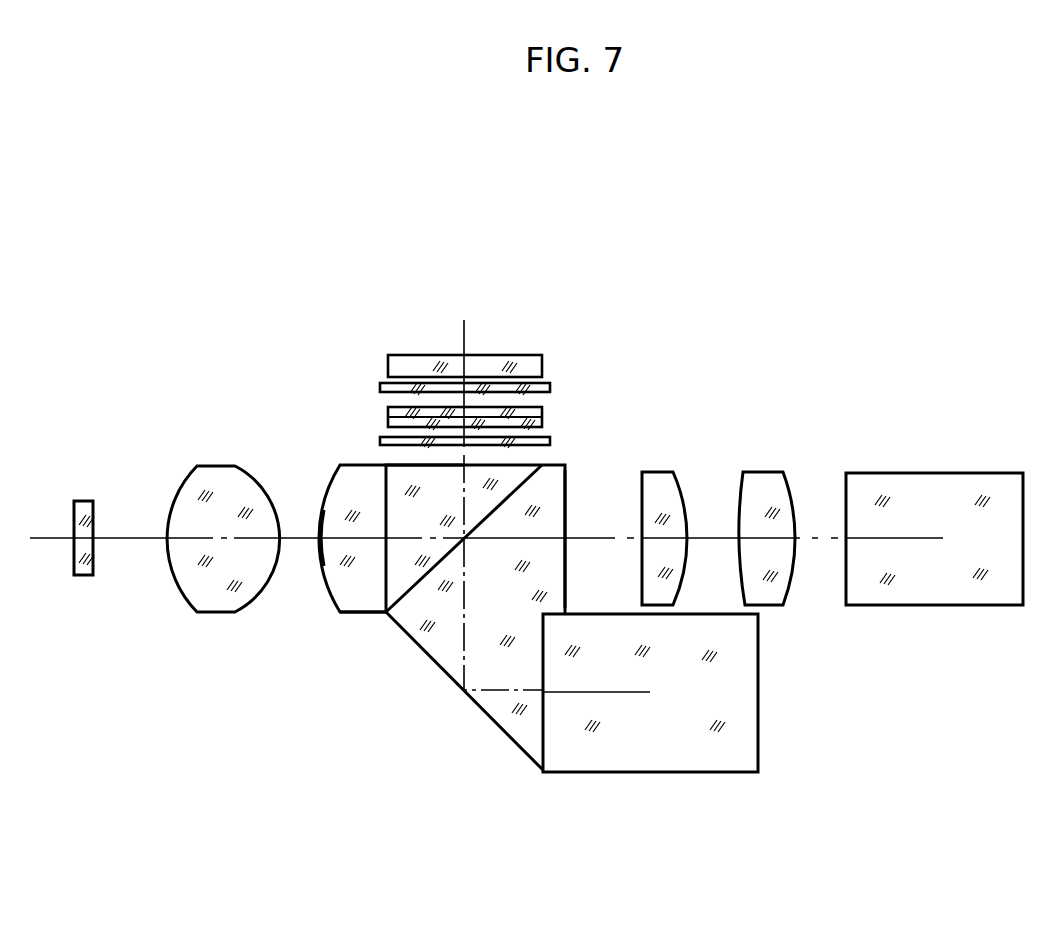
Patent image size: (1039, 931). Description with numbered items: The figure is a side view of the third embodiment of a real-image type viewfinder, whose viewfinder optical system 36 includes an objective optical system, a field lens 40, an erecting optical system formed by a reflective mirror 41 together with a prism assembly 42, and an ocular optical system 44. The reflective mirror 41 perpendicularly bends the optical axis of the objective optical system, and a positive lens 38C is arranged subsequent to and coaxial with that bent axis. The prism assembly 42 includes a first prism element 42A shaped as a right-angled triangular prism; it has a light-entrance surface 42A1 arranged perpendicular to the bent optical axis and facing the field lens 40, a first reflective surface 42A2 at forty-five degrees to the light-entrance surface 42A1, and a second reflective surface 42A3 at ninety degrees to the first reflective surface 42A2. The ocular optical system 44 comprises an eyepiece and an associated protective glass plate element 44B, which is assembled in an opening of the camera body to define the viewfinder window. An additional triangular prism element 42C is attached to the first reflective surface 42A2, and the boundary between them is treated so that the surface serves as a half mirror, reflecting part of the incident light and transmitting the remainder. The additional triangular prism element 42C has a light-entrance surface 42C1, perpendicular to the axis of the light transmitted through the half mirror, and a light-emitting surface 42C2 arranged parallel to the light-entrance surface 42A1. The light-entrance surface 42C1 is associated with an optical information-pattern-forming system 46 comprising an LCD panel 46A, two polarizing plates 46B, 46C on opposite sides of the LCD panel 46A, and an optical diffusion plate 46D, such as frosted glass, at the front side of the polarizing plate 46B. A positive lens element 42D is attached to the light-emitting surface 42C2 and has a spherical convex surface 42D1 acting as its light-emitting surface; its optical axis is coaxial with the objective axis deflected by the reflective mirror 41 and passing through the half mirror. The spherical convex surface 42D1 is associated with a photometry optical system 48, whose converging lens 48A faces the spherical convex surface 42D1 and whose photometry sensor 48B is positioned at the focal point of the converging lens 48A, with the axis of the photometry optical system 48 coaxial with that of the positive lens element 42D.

The viewfinder optical system 36 is at (701, 351).
The positive lens 38C is at (770, 494).
The field lens 40 is at (658, 492).
The reflective mirror 41 is at (941, 582).
The prism assembly 42 is at (413, 682).
The first prism element 42A is at (440, 640).
The light-entrance surface 42A1 is at (567, 495).
The first reflective surface 42A2 is at (534, 483).
The second reflective surface 42A3 is at (522, 740).
The additional triangular prism element 42C is at (386, 610).
The light-entrance surface 42C1 is at (398, 466).
The light-emitting surface 42C2 is at (341, 612).
The positive lens element 42D is at (353, 490).
The spherical convex surface 42D1 is at (317, 596).
The ocular optical system 44 is at (714, 793).
The protective glass plate element 44B is at (610, 772).
The optical information-pattern-forming system 46 is at (513, 307).
The LCD panel 46A is at (388, 417).
The polarizing plate 46B is at (551, 384).
The polarizing plate 46C is at (551, 438).
The optical diffusion plate 46D is at (419, 357).
The photometry optical system 48 is at (138, 488).
The converging lens 48A is at (212, 465).
The photometry sensor 48B is at (84, 576).